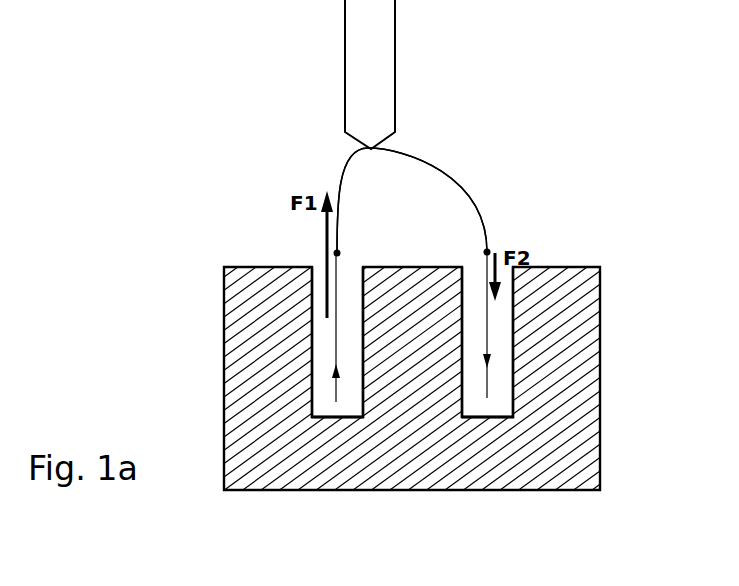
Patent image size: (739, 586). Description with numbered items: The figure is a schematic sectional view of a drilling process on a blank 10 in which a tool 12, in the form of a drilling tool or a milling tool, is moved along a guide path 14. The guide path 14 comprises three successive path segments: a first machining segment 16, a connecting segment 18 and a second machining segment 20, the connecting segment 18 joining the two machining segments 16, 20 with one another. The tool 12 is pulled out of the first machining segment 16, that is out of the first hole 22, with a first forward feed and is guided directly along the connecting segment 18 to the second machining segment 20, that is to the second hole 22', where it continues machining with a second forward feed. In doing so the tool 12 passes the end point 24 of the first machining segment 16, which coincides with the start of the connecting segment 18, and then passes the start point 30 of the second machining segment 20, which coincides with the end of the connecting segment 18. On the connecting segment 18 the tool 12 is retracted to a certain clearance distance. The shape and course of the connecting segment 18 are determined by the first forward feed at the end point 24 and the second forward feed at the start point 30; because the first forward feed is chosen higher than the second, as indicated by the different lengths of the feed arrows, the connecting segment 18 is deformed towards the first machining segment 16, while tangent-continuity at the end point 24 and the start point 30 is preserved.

The substrate 10 is at (553, 423).
The tool 12 is at (370, 71).
The guide path 14 is at (465, 170).
The first machining segment 16 is at (336, 343).
The connecting segment 18 is at (425, 157).
The second machining segment 20 is at (487, 337).
The first hole 22 is at (241, 396).
The second hole 22' is at (583, 393).
The end point of the first machining segment 24 is at (337, 253).
The start point of the second machining segment 30 is at (487, 252).